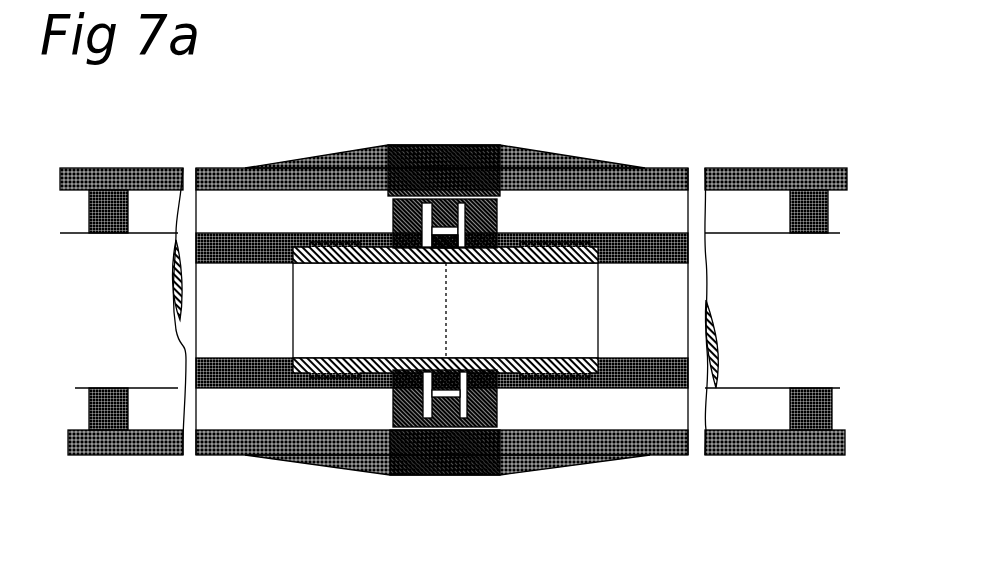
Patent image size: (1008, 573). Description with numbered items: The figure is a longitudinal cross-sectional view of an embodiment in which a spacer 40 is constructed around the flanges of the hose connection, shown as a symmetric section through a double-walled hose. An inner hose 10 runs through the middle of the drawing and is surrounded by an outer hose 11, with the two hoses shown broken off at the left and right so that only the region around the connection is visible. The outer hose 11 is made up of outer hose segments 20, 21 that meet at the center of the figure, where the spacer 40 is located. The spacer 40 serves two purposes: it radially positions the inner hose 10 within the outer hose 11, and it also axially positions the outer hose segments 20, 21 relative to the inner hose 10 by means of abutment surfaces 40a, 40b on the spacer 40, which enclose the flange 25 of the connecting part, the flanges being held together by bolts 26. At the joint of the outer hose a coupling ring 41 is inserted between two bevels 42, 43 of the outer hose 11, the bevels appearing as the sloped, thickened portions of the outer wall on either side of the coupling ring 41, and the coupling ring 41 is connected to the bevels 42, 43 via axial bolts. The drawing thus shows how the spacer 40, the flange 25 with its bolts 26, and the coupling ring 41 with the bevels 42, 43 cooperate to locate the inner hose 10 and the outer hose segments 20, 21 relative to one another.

The inner hose 10 is at (797, 261).
The outer hose 11 is at (757, 178).
The outer hose segment 20 is at (529, 177).
The outer hose segment 21 is at (257, 182).
The flange 25 is at (437, 208).
The bolts 26 is at (452, 212).
The spacer 40 is at (489, 192).
The abutment surface 40a is at (468, 244).
The abutment surface 40b is at (425, 205).
The coupling ring 41 is at (466, 465).
The bevel 42 is at (357, 462).
The bevel 43 is at (548, 452).